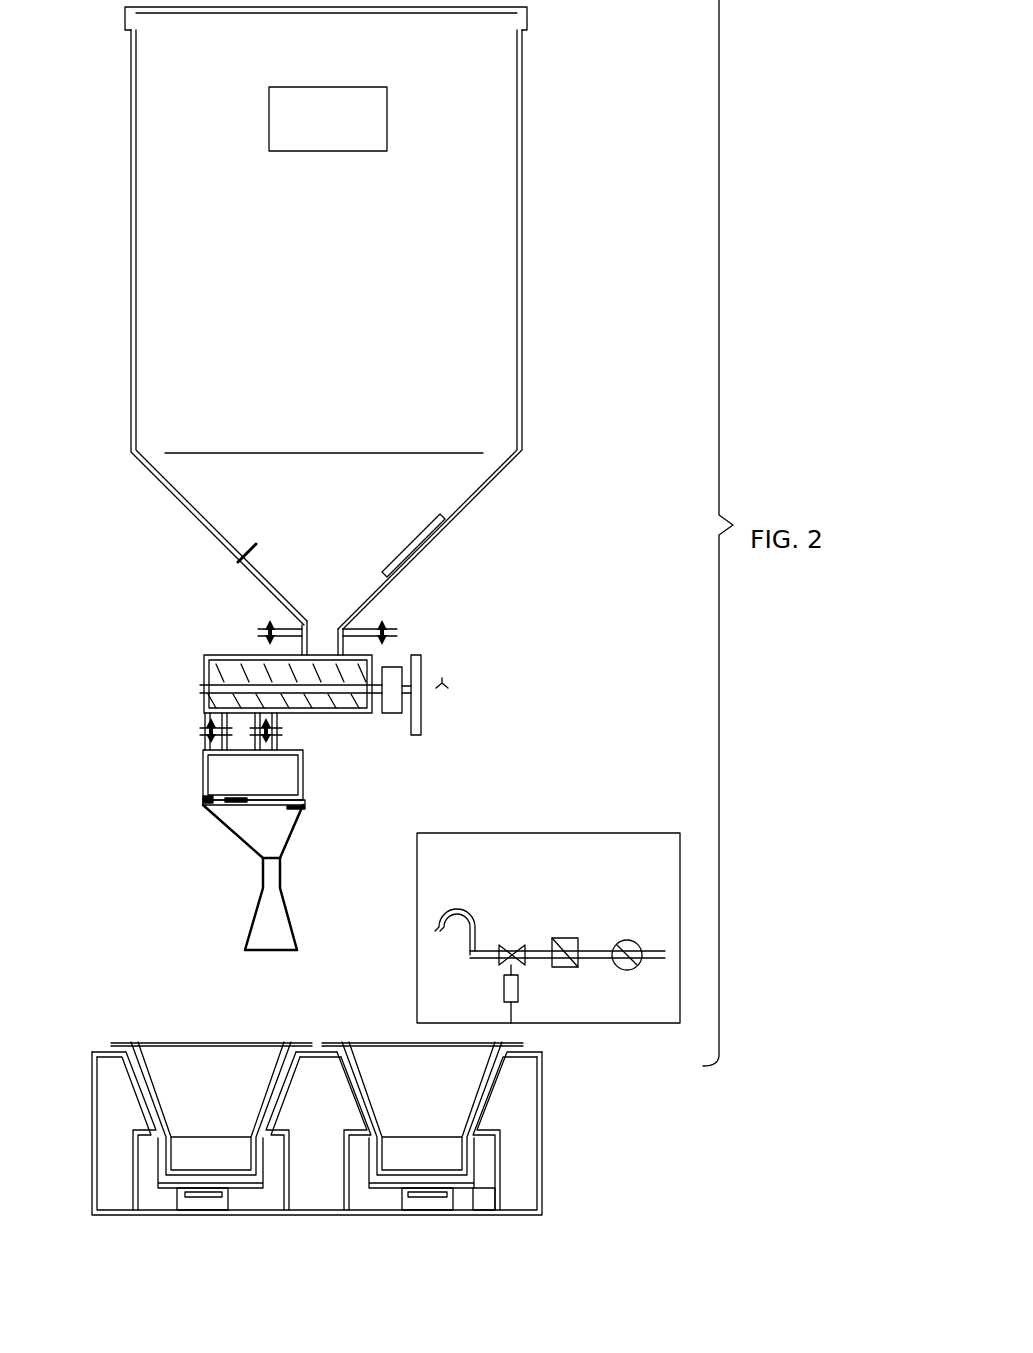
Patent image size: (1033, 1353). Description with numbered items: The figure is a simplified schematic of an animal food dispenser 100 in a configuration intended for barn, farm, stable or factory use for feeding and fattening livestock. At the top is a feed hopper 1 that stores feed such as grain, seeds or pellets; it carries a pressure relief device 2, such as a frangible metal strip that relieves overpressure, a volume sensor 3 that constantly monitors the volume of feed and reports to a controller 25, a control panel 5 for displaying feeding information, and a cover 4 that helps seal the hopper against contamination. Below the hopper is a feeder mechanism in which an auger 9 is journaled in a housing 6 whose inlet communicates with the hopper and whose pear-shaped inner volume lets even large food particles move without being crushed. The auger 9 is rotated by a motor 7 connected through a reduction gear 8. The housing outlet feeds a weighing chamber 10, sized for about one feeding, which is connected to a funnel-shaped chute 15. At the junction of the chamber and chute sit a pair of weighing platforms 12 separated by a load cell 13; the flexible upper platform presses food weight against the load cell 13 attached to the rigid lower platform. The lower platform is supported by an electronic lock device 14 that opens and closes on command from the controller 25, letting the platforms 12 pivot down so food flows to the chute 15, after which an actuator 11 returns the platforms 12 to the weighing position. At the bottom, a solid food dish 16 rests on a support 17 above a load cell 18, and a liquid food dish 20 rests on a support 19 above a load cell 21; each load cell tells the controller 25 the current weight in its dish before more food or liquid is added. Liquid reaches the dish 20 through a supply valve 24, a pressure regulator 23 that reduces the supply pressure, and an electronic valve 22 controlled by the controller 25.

The feed hopper 1 is at (518, 178).
The pressure relief device 2 is at (420, 545).
The volume sensor 3 is at (238, 556).
The cover 4 is at (528, 20).
The control panel 5 is at (387, 130).
The housing 6 is at (225, 655).
The motor 7 is at (415, 710).
The reduction gear 8 is at (392, 708).
The auger 9 is at (355, 705).
The weighing chamber 10 is at (207, 752).
The actuator 11 is at (203, 798).
The weighing platforms 12 is at (230, 799).
The load cell 13 is at (222, 810).
The electronic lock device 14 is at (307, 808).
The chute 15 is at (273, 872).
The solid food dish 16 is at (123, 1040).
The support 17 is at (258, 1188).
The load cell 18 is at (200, 1202).
The support 19 is at (475, 1188).
The liquid food dish 20 is at (326, 1043).
The load cell 21 is at (413, 1200).
The electronic valve 22 is at (515, 945).
The pressure regulator 23 is at (565, 938).
The supply valve 24 is at (620, 940).
The controller 25 is at (518, 988).
The animal food dispenser 100 is at (578, 251).